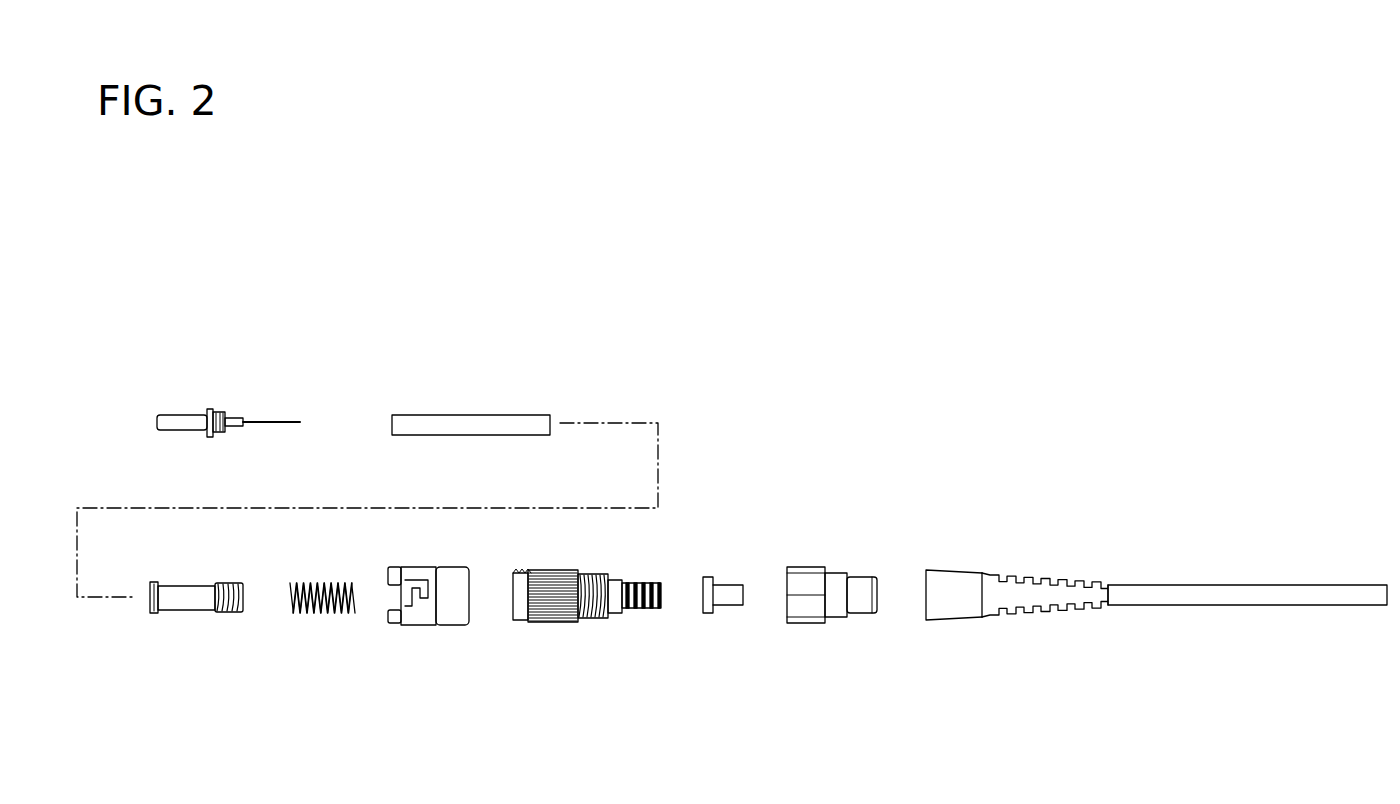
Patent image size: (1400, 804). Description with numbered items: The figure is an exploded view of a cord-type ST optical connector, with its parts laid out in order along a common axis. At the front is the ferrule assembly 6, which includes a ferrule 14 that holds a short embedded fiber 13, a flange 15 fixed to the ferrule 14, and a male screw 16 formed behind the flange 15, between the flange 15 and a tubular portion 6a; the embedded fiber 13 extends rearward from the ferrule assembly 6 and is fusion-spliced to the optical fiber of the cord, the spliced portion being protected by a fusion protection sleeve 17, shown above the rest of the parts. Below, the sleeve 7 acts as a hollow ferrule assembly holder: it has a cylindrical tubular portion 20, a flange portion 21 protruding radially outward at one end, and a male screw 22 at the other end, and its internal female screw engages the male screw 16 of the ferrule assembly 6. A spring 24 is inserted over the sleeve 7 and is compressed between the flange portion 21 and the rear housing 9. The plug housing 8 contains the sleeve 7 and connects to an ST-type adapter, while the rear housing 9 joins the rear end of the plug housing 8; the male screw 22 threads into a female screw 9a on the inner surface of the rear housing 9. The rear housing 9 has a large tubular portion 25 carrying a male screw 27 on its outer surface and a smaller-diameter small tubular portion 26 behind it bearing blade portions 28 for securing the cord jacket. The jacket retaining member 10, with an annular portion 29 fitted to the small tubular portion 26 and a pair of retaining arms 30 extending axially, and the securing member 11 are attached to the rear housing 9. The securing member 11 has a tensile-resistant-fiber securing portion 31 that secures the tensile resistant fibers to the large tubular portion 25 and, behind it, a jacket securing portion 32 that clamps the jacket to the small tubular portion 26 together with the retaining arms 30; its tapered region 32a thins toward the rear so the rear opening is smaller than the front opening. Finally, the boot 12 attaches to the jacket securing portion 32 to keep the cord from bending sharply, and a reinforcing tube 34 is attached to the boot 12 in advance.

The ferrule assembly 6 is at (234, 401).
The tubular portion 6a is at (238, 418).
The sleeve 7 is at (183, 611).
The plug housing 8 is at (450, 600).
The rear housing 9 is at (575, 615).
The female screw 9a is at (525, 585).
The jacket retaining member 10 is at (727, 612).
The securing member 11 is at (859, 599).
The boot 12 is at (961, 610).
The embedded fiber 13 is at (297, 422).
The ferrule 14 is at (170, 420).
The flange 15 is at (212, 418).
The male screw 16 is at (222, 436).
The fusion protection sleeve 17 is at (461, 420).
The tubular portion 20 is at (185, 590).
The flange portion 21 is at (152, 585).
The male screw 22 is at (232, 585).
The spring 24 is at (315, 590).
The large tubular portion 25 is at (614, 612).
The small tubular portion 26 is at (656, 610).
The male screw 27 is at (593, 580).
The blade portions 28 is at (630, 582).
The annular portion 29 is at (713, 613).
The retaining arms 30 is at (737, 588).
The tensile-resistant-fiber securing portion 31 is at (806, 570).
The jacket securing portion 32 is at (865, 612).
The tapered region 32a is at (853, 578).
The reinforcing tube 34 is at (1238, 595).